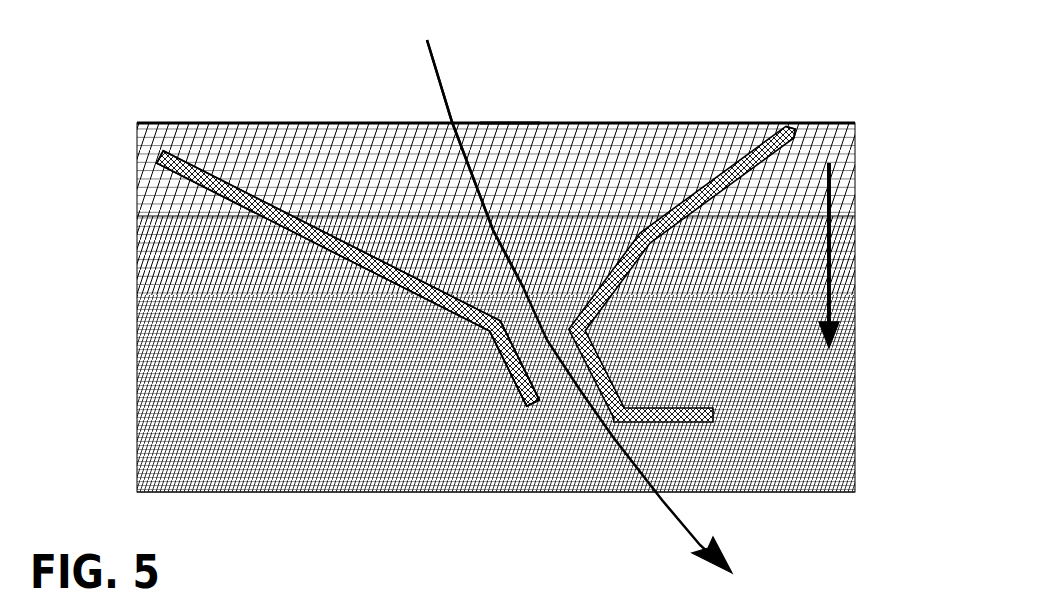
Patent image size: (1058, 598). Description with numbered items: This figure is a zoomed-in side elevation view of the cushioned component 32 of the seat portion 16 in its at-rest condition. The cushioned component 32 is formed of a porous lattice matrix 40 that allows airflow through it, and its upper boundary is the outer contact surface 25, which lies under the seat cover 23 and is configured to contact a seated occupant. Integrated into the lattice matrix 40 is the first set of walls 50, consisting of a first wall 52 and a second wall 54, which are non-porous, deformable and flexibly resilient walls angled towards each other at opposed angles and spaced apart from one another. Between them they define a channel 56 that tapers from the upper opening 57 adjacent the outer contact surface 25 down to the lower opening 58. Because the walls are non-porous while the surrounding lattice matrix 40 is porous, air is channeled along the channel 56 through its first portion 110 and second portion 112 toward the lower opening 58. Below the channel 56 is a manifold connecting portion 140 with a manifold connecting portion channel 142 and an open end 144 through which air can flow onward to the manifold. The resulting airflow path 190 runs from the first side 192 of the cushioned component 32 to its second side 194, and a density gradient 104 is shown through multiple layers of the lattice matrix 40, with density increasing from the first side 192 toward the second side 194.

The seat portion 16 is at (88, 159).
The seat cover 23 is at (147, 121).
The outer contact surface 25 is at (188, 121).
The upper opening 57 is at (235, 153).
The lattice matrix 40 is at (120, 231).
The cushioned component 32 is at (123, 398).
The channel 56 is at (440, 216).
The first wall 52 is at (302, 237).
The first set of walls 50 is at (318, 269).
The second portion 112 is at (476, 338).
The lower opening 58 is at (528, 323).
The manifold connecting portion 140 is at (510, 403).
The open end 144 is at (539, 422).
The manifold connecting portion channel 142 is at (557, 381).
The airflow path 190 is at (500, 238).
The first side 192 is at (510, 121).
The second side 194 is at (745, 493).
The second wall 54 is at (644, 264).
The first portion 110 is at (802, 152).
The density gradient 104 is at (832, 283).